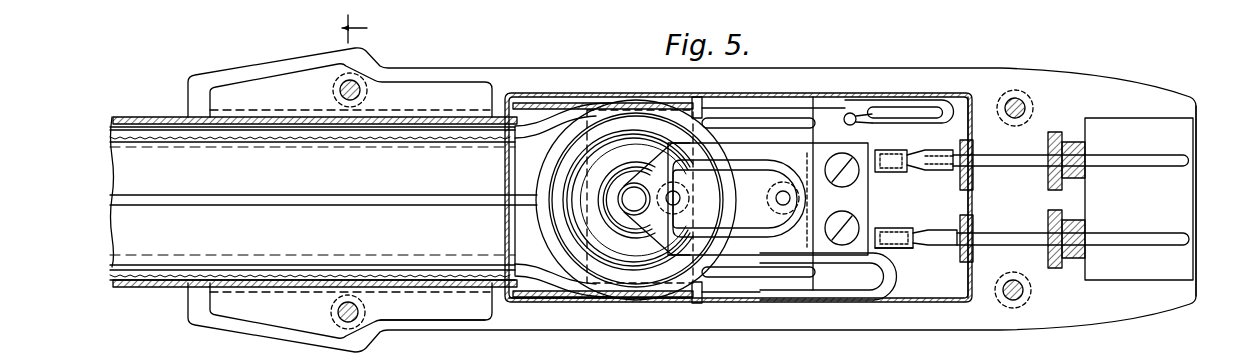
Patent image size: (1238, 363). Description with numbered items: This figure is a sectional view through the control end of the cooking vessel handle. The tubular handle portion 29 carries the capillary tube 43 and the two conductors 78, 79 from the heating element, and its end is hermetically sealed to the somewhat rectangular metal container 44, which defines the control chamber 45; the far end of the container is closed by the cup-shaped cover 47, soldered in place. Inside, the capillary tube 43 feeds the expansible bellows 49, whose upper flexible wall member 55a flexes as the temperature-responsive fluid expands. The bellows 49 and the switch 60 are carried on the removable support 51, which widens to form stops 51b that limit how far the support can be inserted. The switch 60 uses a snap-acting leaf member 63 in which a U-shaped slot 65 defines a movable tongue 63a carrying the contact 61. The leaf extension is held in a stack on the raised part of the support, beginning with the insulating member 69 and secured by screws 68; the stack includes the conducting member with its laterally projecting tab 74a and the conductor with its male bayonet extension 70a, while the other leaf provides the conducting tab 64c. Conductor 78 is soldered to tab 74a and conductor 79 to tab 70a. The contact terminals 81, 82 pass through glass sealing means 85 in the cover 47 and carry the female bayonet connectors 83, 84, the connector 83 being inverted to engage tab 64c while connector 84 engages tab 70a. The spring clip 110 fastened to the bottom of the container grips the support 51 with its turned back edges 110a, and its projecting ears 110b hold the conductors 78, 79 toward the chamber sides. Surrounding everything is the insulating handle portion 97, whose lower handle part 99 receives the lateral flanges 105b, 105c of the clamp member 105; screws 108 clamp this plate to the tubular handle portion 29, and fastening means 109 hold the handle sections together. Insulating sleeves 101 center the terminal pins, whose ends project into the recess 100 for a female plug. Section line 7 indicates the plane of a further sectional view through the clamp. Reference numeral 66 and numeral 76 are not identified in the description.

The section line 7— 7 is at (360, 29).
The tubular handle portion 29 is at (130, 117).
The capillary tube 43 is at (330, 200).
The metal container 44 is at (533, 96).
The control chamber 45 is at (552, 304).
The cover 47 is at (973, 112).
The expansible bellows 49 is at (538, 173).
The removable support 51 is at (731, 142).
The stops 51b is at (813, 128).
The flexible wall member 55a is at (572, 218).
The switch 60 is at (823, 140).
The contact 61 is at (722, 236).
The snap-acting leaf member 63 is at (722, 200).
The movable tongue 63a is at (697, 251).
The conducting tab 64c is at (873, 131).
The U-shaped slot 65 is at (760, 166).
The lever edge 66 is at (691, 154).
The screws 68 is at (855, 178).
The insulating member 69 is at (636, 199).
The bayonet extension 70a is at (905, 241).
The conducting tab 74a is at (850, 134).
The strip 76 is at (900, 102).
The conductor 78 is at (226, 137).
The conductor 79 is at (183, 267).
The contact terminal 81 is at (989, 158).
The contact terminal 82 is at (1010, 240).
The female bayonet connector 83 is at (832, 234).
The female bayonet connector 84 is at (898, 249).
The glass sealing means 85 is at (975, 190).
The insulating handle portion 97 is at (599, 66).
The lower handle part 99 is at (450, 68).
The recess 100 is at (1182, 186).
The insulating sleeves 101 is at (1080, 203).
The clamp member 105 is at (277, 316).
The lateral flange 105b is at (297, 318).
The lateral flange 105c is at (263, 90).
The screws 108 is at (340, 92).
The fastening means 109 is at (1026, 106).
The spring clip 110 is at (772, 278).
The turned back edges 110a is at (728, 120).
The projecting ears 110b is at (708, 132).